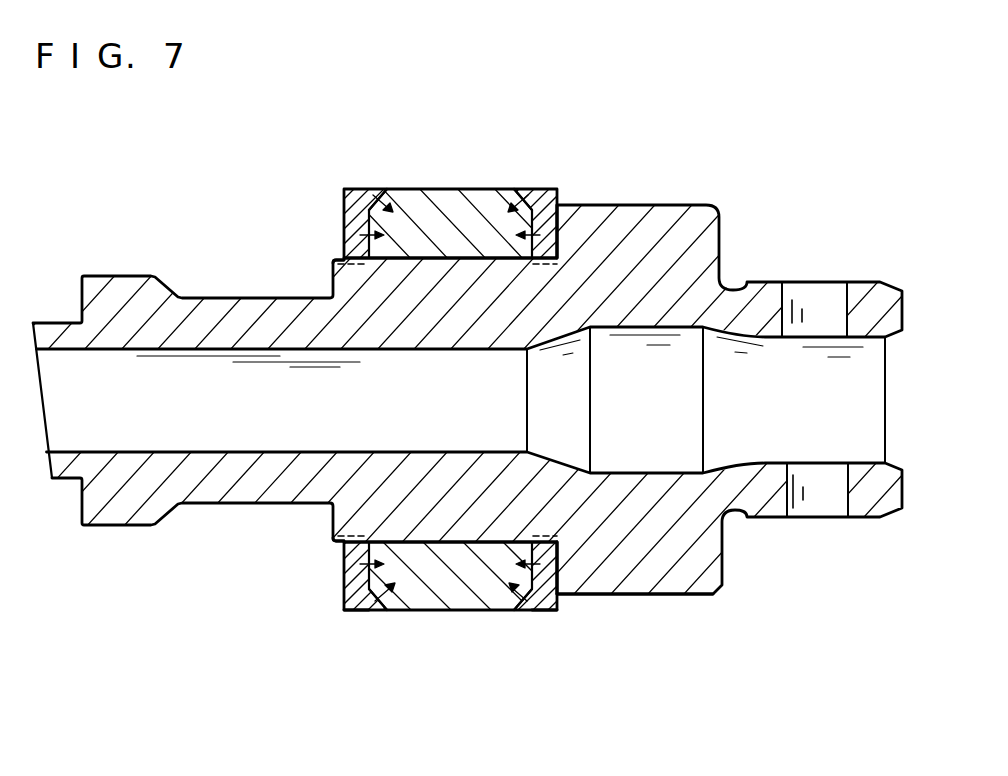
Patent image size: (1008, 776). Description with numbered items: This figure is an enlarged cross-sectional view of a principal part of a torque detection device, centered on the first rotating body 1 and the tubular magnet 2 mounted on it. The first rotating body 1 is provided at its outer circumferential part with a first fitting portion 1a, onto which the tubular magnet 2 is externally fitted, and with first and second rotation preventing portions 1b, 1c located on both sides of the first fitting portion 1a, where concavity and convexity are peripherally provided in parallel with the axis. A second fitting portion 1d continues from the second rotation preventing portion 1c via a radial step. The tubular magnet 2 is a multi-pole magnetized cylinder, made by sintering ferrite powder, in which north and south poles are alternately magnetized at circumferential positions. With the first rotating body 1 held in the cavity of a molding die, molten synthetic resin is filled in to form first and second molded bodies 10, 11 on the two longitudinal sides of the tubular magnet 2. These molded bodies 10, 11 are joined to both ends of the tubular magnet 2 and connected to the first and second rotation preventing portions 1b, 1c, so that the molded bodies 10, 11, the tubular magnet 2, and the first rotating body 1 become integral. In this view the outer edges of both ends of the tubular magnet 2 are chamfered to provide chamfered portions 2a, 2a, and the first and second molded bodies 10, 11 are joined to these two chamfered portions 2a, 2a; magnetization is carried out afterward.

The first rotating body 1 is at (728, 571).
The first fitting portion 1a is at (402, 543).
The first rotation preventing portion 1b is at (346, 547).
The second rotation preventing portion 1c is at (560, 557).
The second fitting portion 1d is at (657, 594).
The tubular magnet 2 is at (462, 606).
The chamfered portion 2a is at (377, 609).
The first molded body 10 is at (358, 610).
The second molded body 11 is at (550, 611).